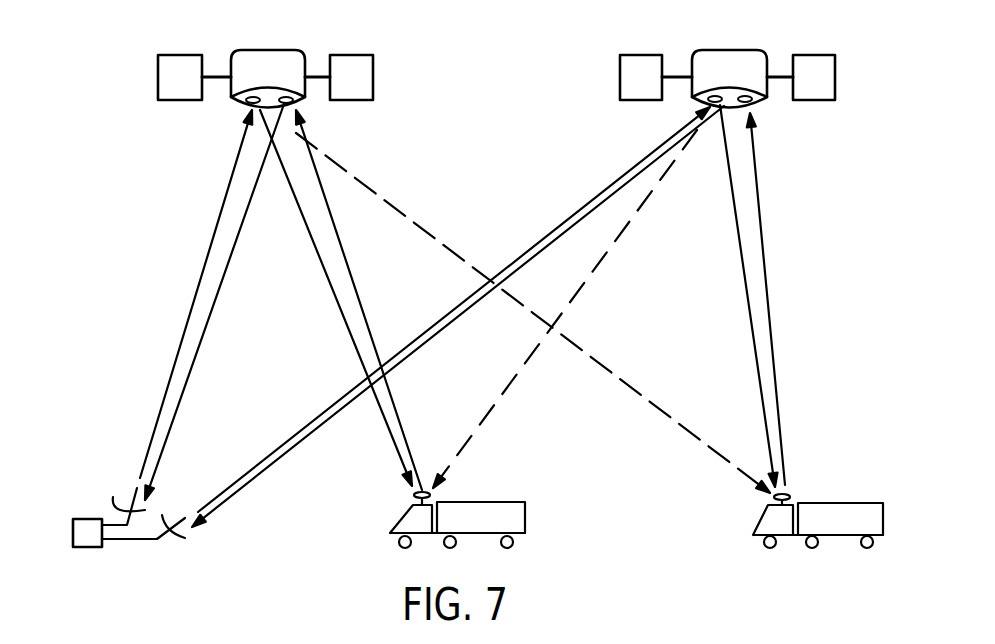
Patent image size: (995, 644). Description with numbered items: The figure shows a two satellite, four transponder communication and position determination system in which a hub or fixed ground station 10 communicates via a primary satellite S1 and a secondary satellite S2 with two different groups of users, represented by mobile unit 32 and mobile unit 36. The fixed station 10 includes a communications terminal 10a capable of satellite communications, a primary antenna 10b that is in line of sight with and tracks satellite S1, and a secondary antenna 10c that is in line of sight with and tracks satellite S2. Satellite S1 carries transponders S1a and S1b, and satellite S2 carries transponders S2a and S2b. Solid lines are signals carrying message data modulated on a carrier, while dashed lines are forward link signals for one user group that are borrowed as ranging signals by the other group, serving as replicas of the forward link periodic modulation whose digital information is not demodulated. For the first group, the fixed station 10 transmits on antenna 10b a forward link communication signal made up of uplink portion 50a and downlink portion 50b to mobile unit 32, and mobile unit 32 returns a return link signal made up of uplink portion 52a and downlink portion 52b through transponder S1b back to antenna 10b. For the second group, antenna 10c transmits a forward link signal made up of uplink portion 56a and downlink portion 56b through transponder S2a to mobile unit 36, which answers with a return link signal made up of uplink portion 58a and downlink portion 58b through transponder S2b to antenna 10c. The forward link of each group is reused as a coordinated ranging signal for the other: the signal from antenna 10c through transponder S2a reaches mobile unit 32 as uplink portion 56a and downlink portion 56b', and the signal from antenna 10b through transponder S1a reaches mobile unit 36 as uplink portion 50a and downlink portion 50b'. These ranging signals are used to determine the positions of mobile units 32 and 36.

The primary satellite S1 is at (266, 71).
The transponder S1a is at (233, 103).
The transponder S1b is at (307, 104).
The secondary satellite S2 is at (709, 72).
The transponder S2a is at (693, 101).
The transponder S2b is at (767, 101).
The fixed ground station 10 is at (120, 525).
The communications terminal 10a is at (88, 548).
The primary antenna 10b is at (118, 497).
The secondary antenna 10c is at (172, 540).
The mobile unit 32 is at (493, 502).
The mobile unit 36 is at (845, 503).
The uplink portion 50a is at (220, 215).
The downlink portion 50b is at (336, 298).
The downlink portion 50b' is at (533, 313).
The uplink portion 52a is at (353, 278).
The downlink portion 52b is at (220, 287).
The uplink portion 56a is at (315, 413).
The downlink portion 56b is at (720, 296).
The downlink portion 56b' is at (565, 309).
The uplink portion 58a is at (763, 232).
The downlink portion 58b is at (325, 425).